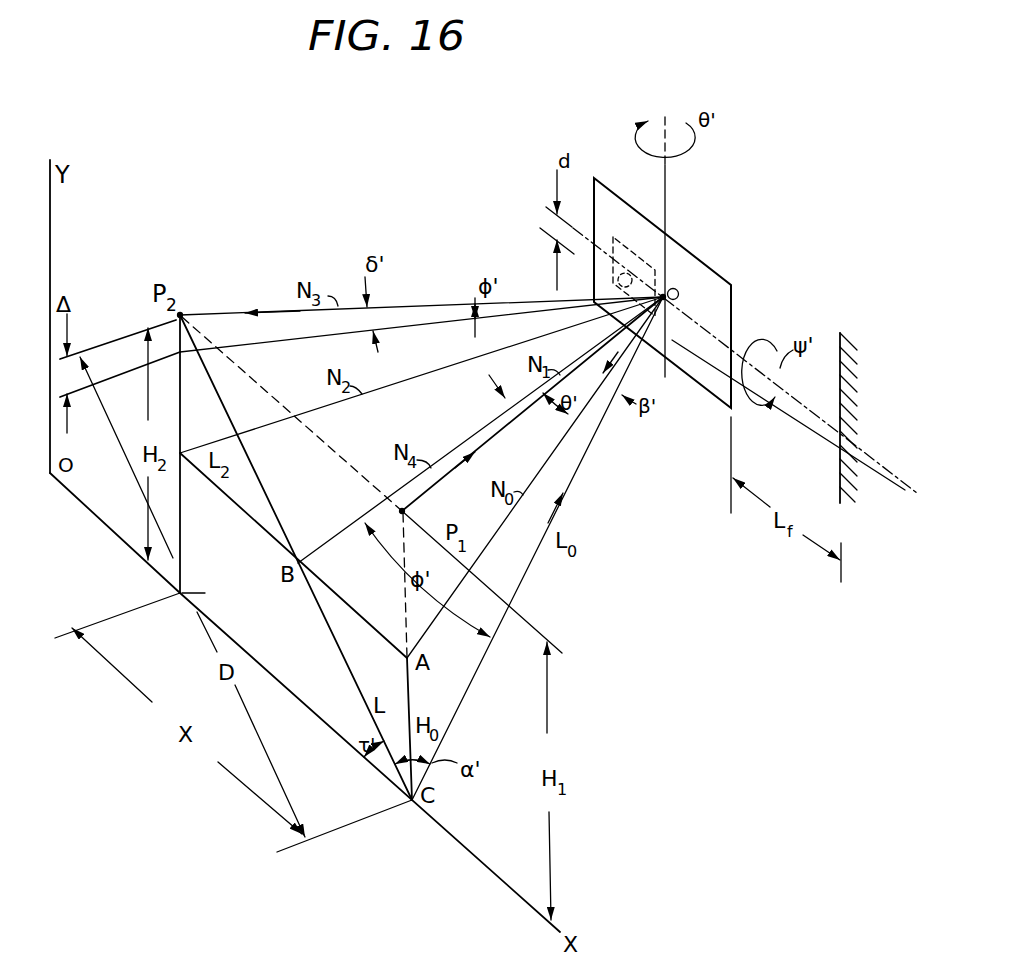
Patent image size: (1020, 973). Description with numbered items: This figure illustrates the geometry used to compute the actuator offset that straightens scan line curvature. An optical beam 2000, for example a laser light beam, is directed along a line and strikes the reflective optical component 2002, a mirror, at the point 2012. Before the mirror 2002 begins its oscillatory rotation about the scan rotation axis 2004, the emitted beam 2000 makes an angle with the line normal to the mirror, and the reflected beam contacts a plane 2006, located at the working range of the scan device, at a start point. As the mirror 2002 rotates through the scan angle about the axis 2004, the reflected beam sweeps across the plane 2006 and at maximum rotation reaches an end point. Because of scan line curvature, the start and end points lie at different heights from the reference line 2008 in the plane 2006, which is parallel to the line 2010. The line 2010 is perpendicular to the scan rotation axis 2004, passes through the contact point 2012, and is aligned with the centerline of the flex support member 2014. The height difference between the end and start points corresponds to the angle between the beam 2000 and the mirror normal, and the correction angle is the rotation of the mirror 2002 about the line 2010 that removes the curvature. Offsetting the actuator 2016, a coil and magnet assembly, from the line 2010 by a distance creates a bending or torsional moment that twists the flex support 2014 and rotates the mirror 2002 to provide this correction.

The optical beam 2000 is at (575, 480).
The reflective optical component 2002 is at (718, 278).
The scan rotation axis 2004 is at (665, 117).
The plane 2006 is at (180, 593).
The reference line 2008 is at (313, 712).
The line 2010 is at (705, 327).
The point 2012 is at (670, 301).
The flex support member 2014 is at (813, 432).
The actuator 2016 is at (636, 270).